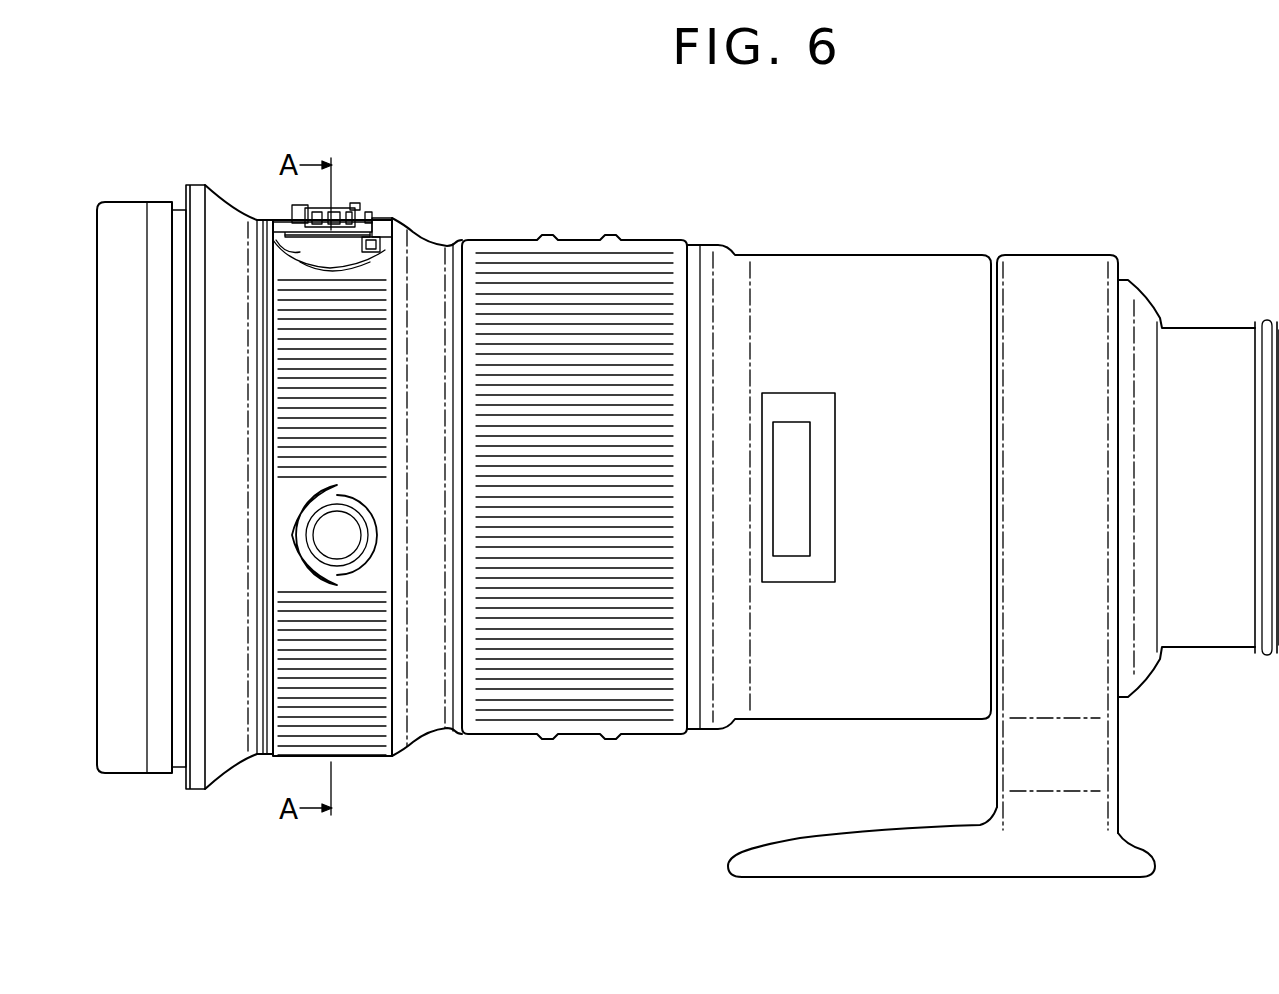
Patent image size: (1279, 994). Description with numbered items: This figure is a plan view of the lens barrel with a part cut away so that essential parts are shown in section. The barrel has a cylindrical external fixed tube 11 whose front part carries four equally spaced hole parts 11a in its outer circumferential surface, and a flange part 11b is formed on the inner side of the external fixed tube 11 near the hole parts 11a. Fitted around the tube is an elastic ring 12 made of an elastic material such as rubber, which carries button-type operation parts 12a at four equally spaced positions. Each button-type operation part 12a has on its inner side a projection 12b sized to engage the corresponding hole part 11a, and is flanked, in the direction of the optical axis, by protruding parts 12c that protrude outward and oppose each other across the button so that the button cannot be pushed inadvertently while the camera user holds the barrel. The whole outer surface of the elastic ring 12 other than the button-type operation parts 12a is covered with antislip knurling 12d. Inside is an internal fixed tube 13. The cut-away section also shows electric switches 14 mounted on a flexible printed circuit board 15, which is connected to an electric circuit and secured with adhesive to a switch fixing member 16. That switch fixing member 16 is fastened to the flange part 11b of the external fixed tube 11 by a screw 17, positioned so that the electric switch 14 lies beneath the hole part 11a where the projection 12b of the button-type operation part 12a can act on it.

The external fixed tube 11 is at (398, 222).
The hole part 11a is at (250, 212).
The flange part 11b is at (425, 245).
The elastic ring 12 is at (272, 206).
The button-type operation part 12a is at (336, 205).
The projection 12b is at (388, 222).
The protruding part 12c is at (293, 205).
The antislip knurling 12d is at (385, 347).
The internal fixed tube 13 is at (392, 287).
The electric switch 14 is at (355, 203).
The flexible printed circuit board 15 is at (330, 234).
The switch fixing member 16 is at (300, 242).
The screw 17 is at (368, 246).